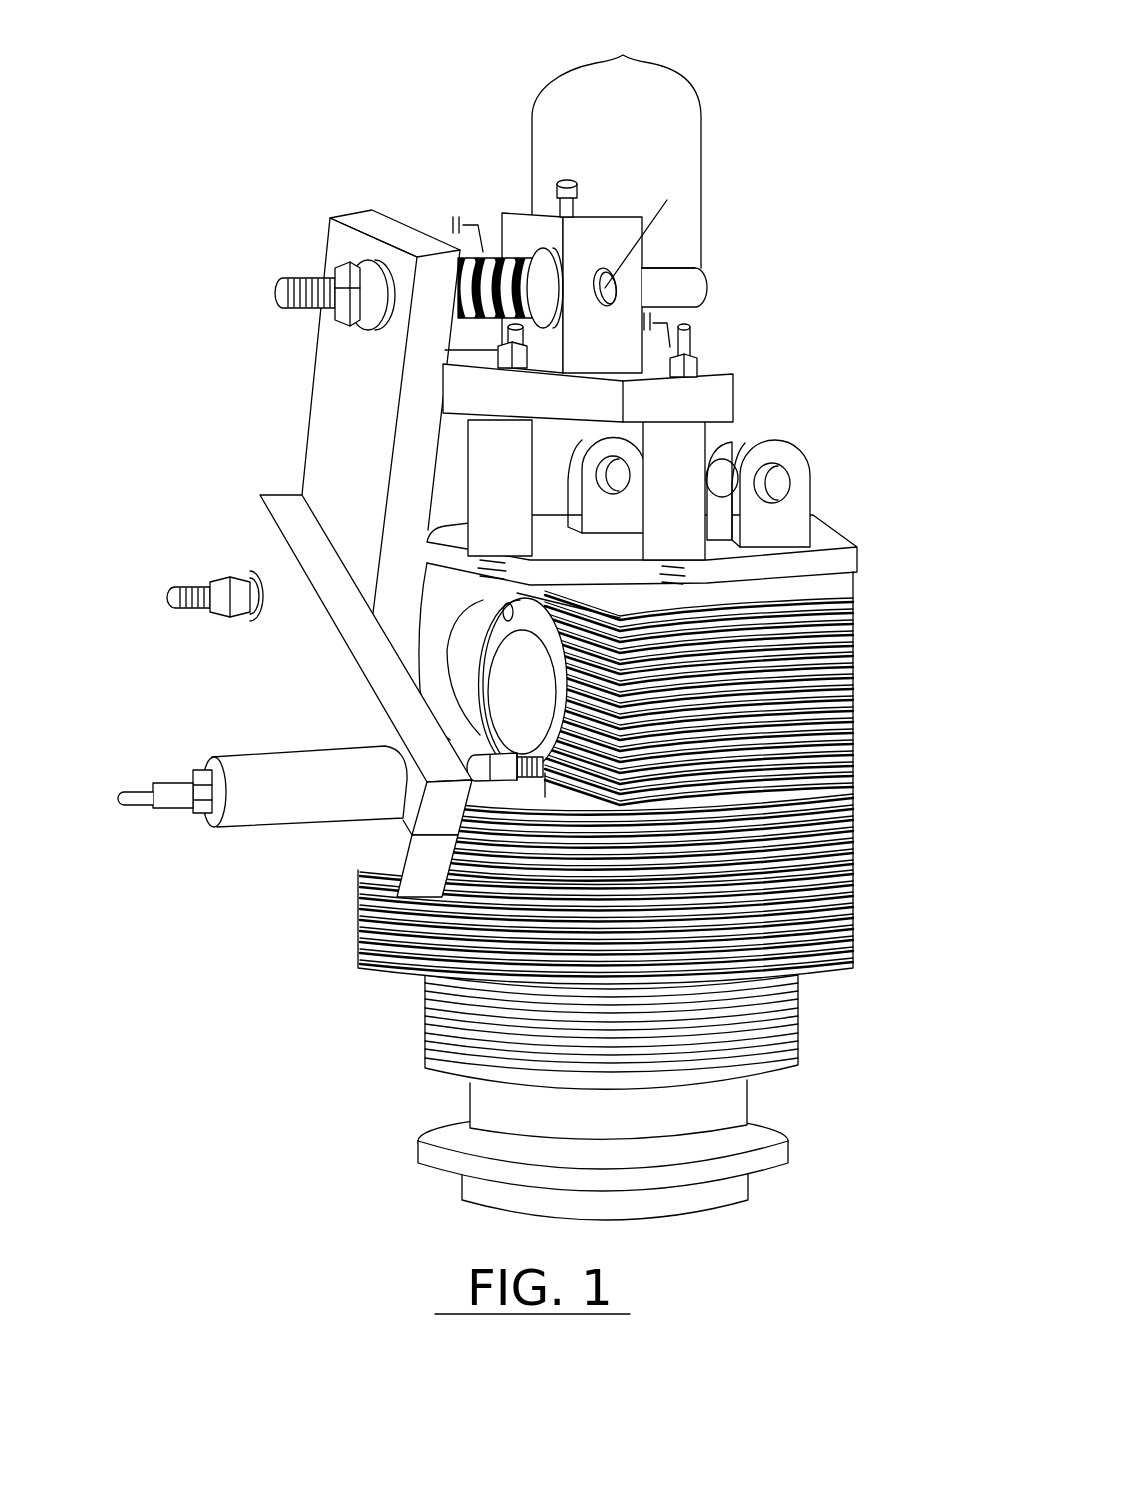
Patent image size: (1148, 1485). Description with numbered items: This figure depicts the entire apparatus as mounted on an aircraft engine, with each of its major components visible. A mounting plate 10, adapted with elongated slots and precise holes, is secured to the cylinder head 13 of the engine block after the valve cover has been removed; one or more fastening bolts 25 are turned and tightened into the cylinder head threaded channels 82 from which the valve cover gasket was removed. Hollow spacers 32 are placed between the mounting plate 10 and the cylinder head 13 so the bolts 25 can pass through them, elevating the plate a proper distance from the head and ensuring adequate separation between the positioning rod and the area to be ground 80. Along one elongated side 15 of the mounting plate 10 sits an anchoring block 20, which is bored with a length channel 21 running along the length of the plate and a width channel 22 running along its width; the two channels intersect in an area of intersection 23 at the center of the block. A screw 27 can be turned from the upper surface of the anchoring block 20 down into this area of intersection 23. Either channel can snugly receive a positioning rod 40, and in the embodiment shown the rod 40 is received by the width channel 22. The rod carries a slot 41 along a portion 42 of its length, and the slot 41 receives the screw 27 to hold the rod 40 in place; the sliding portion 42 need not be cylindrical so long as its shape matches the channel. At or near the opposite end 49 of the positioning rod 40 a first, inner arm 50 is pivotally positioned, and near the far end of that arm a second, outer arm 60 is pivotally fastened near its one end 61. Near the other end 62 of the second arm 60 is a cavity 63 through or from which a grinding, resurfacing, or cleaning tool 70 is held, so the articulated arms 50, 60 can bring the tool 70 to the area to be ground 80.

The mounting plate 10 is at (733, 402).
The cylinder head 13 is at (815, 520).
The elongated side 15 is at (482, 398).
The anchoring block 20 is at (502, 213).
The length channel 21 is at (603, 285).
The width channel 22 is at (533, 240).
The area of intersection 23 is at (643, 236).
The fastening bolts 25 is at (667, 352).
The screw 27 is at (575, 193).
The spacers 32 is at (803, 440).
The positioning rod 40 is at (708, 278).
The slot 41 is at (693, 267).
The portion of the positioning rod 42 is at (623, 56).
The opposite end of the positioning rod 49 is at (300, 270).
The first arm 50 is at (313, 382).
The second arm 60 is at (253, 673).
The one end of the second arm 61 is at (243, 547).
The other end of the second arm 62 is at (400, 850).
The cavity 63 is at (400, 760).
The tool 70 is at (257, 827).
The area to be ground 80 is at (563, 697).
The cylinder head threaded channels 82 is at (660, 577).